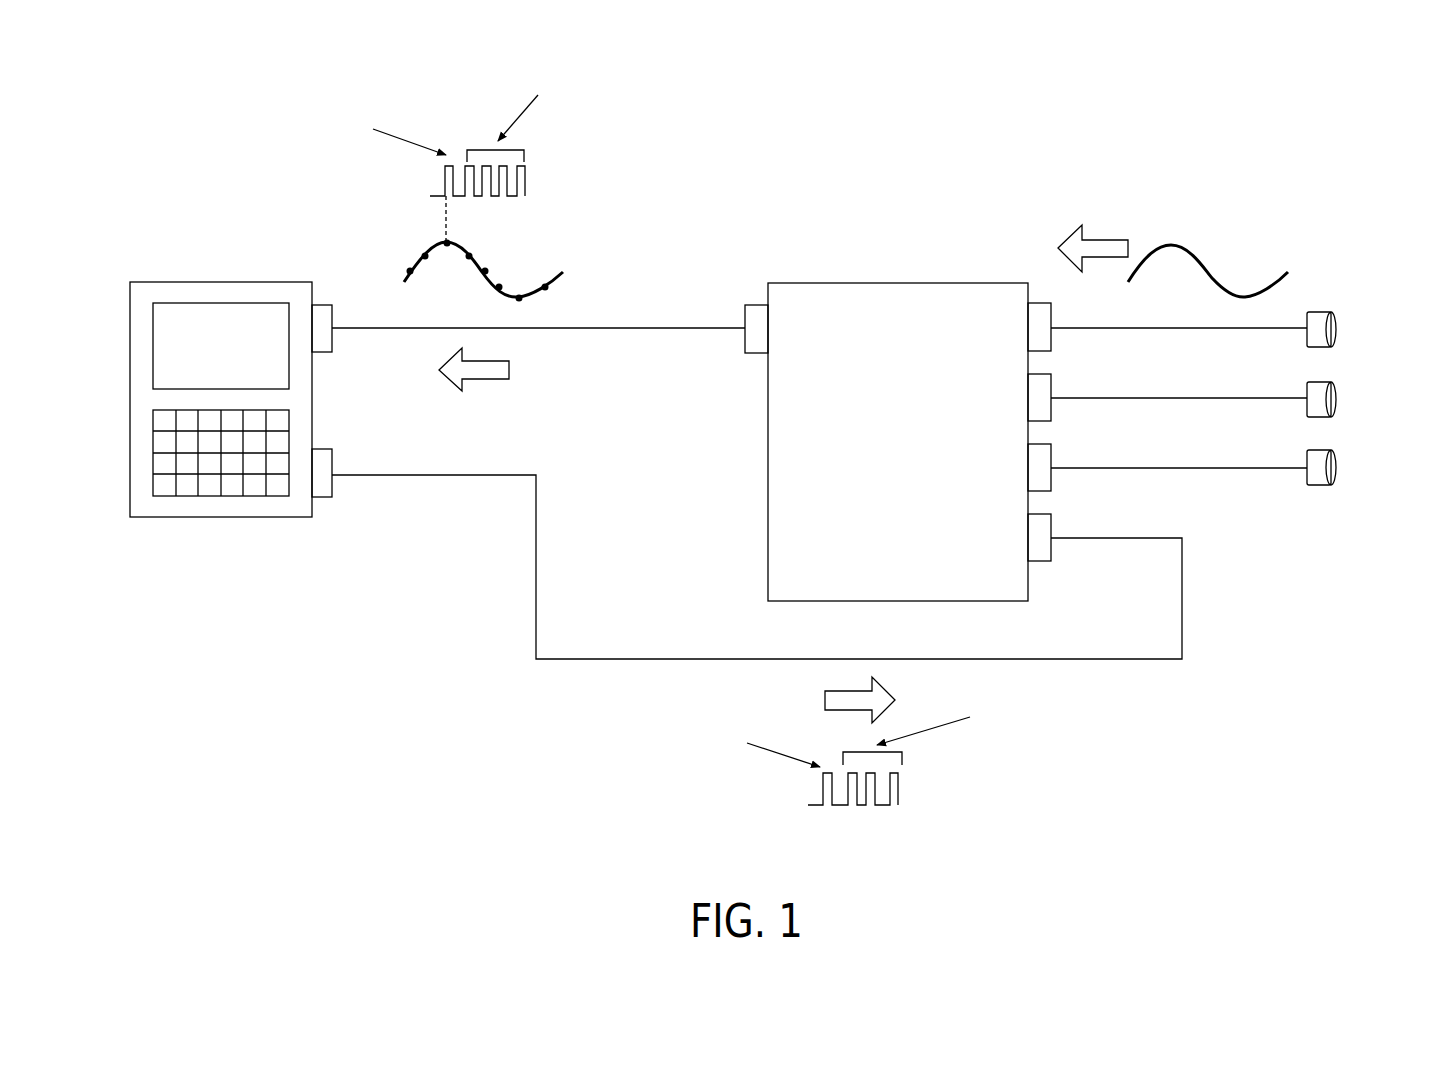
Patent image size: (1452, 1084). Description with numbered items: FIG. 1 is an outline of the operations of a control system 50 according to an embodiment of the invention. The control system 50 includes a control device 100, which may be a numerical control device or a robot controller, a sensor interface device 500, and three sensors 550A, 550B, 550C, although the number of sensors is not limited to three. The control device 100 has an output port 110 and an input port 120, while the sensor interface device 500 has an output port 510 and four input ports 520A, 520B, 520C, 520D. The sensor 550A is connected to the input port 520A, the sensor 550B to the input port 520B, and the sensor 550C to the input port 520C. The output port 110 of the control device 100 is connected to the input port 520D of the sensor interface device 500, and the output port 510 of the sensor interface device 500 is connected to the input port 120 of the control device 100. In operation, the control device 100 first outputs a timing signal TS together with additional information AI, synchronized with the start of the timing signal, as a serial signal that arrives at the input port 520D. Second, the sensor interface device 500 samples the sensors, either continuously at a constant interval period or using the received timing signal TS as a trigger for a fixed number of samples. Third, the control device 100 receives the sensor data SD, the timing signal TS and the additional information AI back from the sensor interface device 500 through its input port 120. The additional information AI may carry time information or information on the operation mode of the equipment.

The control system 50 is at (1380, 121).
The control device 100 is at (251, 283).
The output port 110 is at (333, 459).
The input port 120 is at (333, 316).
The sensor interface device 500 is at (873, 283).
The output port 510 is at (745, 354).
The input port 520A is at (1052, 352).
The input port 520B is at (1052, 422).
The input port 520C is at (1052, 492).
The input port 520D is at (1052, 562).
The sensor 550A is at (1340, 320).
The sensor 550B is at (1340, 390).
The sensor 550C is at (1340, 460).